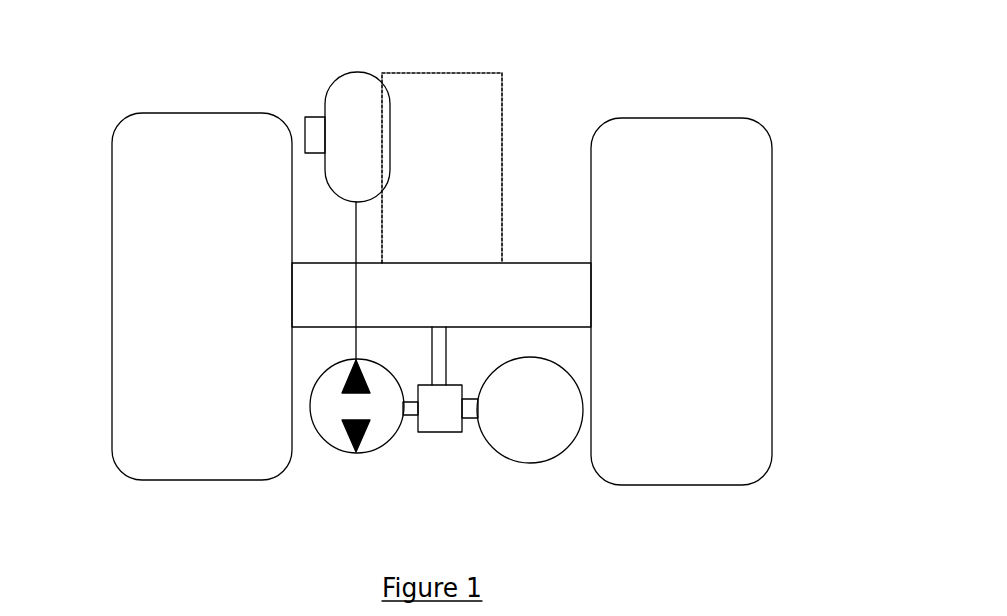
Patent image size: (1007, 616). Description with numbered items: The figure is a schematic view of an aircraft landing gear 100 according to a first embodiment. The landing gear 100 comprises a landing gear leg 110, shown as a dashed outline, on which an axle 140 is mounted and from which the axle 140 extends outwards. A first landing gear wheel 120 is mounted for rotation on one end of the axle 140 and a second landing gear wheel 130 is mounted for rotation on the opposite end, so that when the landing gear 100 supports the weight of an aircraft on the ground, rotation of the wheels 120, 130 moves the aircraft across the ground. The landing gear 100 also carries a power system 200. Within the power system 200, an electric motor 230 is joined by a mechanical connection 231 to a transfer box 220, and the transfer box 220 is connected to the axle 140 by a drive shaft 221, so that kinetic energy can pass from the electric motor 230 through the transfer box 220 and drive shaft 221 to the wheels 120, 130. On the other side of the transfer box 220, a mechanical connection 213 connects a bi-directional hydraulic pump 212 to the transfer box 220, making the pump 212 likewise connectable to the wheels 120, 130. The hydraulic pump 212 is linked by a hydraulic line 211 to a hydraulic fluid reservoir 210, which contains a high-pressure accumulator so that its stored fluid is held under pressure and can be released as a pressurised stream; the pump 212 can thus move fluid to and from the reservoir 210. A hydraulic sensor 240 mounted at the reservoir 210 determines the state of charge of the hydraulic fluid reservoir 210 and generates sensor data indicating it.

The aircraft landing gear 100 is at (705, 35).
The landing gear leg 110 is at (462, 118).
The first landing gear wheel 120 is at (150, 265).
The second landing gear wheel 130 is at (748, 340).
The axle 140 is at (527, 288).
The power system 200 is at (167, 68).
The hydraulic fluid reservoir 210 is at (330, 92).
The hydraulic line 211 is at (355, 290).
The bi-directional hydraulic pump 212 is at (335, 432).
The mechanical connection 213 is at (412, 418).
The transfer box 220 is at (433, 418).
The drive shaft 221 is at (442, 355).
The electric motor 230 is at (535, 432).
The mechanical connection 231 is at (468, 407).
The hydraulic sensor 240 is at (320, 130).